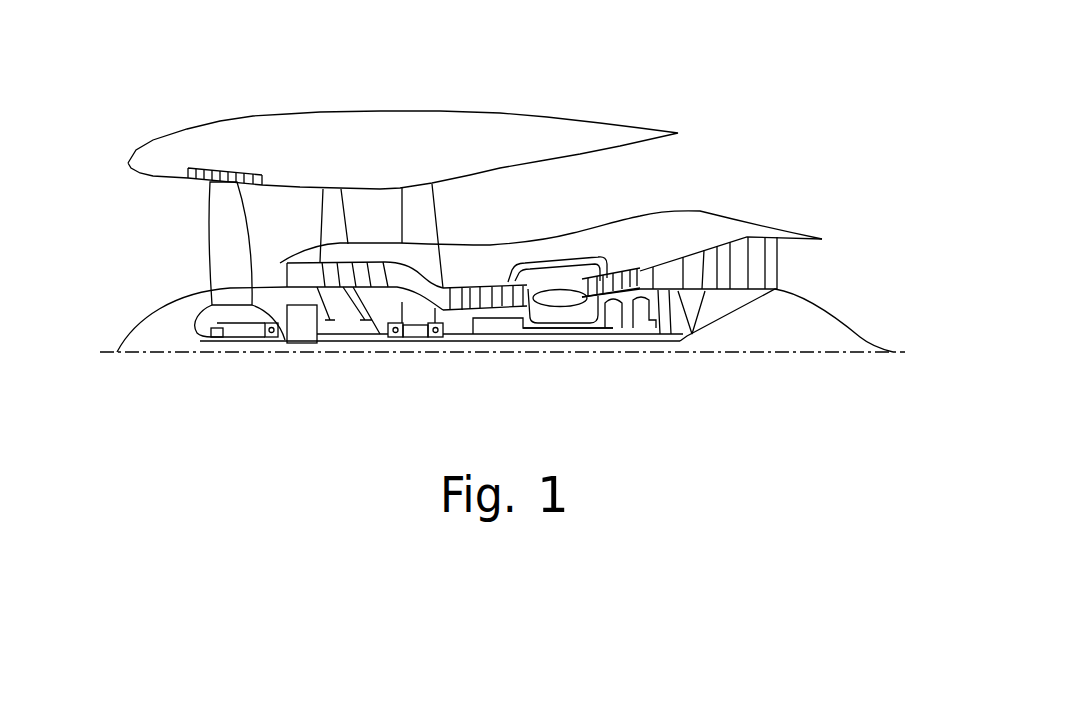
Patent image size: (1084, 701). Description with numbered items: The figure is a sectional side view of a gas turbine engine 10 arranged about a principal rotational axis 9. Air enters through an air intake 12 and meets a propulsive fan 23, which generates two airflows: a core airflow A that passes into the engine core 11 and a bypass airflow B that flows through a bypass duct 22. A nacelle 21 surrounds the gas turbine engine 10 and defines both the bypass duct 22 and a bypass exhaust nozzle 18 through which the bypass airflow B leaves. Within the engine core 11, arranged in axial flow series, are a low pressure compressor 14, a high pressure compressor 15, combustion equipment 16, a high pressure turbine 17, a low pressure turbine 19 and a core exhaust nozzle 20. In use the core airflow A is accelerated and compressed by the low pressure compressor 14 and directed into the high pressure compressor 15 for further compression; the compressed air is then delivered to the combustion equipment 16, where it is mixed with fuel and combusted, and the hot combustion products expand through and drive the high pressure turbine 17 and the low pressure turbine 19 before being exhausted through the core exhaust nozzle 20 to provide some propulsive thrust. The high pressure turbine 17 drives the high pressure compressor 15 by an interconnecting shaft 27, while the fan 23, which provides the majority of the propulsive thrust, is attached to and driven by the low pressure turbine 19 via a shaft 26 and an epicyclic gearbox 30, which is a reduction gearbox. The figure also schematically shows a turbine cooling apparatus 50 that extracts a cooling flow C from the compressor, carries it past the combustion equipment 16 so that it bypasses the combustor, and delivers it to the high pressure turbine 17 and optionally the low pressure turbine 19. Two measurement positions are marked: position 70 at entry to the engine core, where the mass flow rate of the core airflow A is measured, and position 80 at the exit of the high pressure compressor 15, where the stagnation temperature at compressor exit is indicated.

The principal rotational axis 9 is at (791, 353).
The gas turbine engine 10 is at (186, 131).
The engine core 11 is at (541, 254).
The air intake 12 is at (143, 197).
The low pressure compressor 14 is at (363, 267).
The high pressure compressor 15 is at (493, 291).
The combustion equipment 16 is at (557, 305).
The high pressure turbine 17 is at (614, 280).
The bypass exhaust nozzle 18 is at (734, 166).
The low pressure turbine 19 is at (742, 280).
The core exhaust nozzle 20 is at (822, 274).
The nacelle 21 is at (417, 127).
The bypass duct 22 is at (655, 171).
The propulsive fan 23 is at (213, 260).
The shaft 26 is at (460, 343).
The interconnecting shaft 27 is at (520, 330).
The epicyclic gearbox 30 is at (302, 340).
The turbine cooling apparatus 50 is at (575, 253).
The position at entry to the engine core 70 is at (283, 277).
The position at exit of the high pressure compressor 80 is at (531, 305).
The core airflow A is at (273, 273).
The bypass airflow B is at (273, 223).
The cooling flow C is at (512, 281).